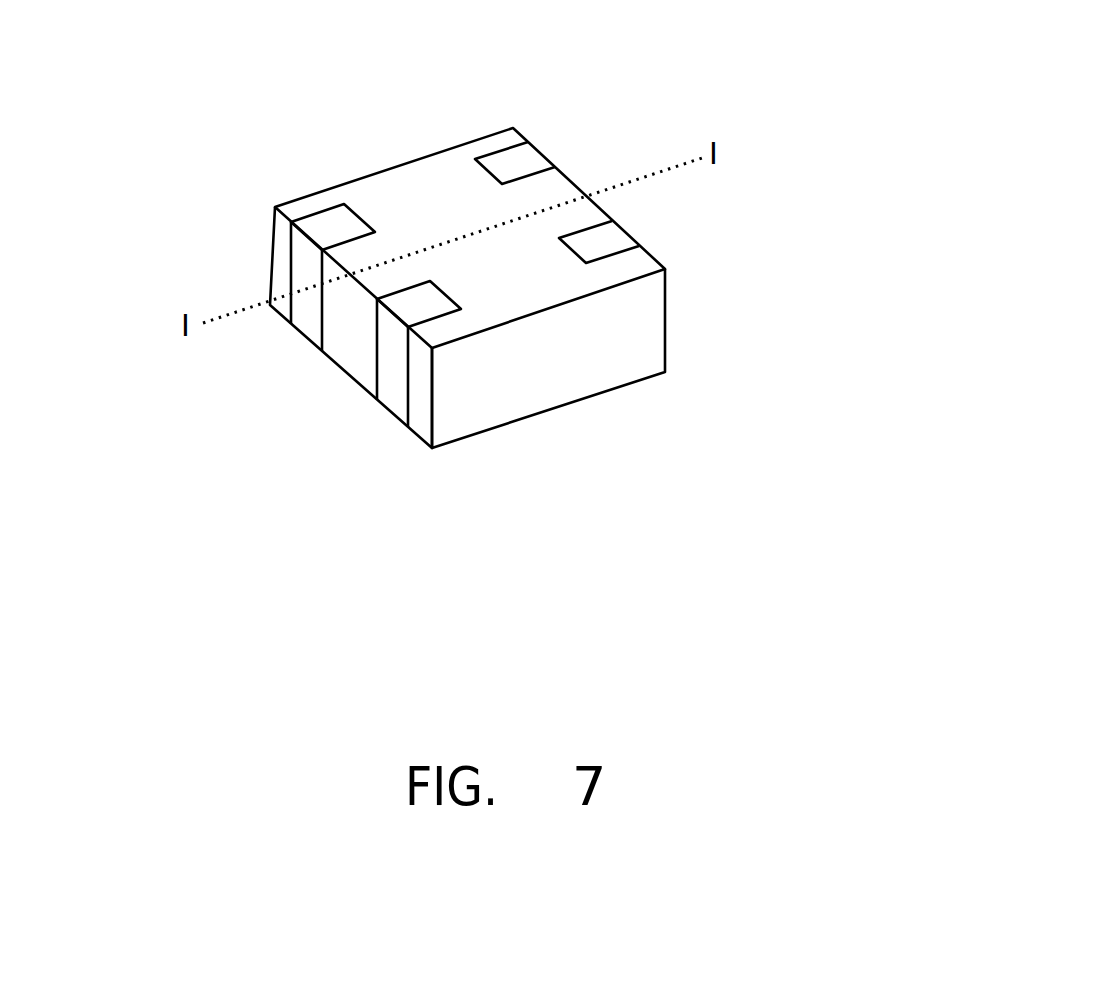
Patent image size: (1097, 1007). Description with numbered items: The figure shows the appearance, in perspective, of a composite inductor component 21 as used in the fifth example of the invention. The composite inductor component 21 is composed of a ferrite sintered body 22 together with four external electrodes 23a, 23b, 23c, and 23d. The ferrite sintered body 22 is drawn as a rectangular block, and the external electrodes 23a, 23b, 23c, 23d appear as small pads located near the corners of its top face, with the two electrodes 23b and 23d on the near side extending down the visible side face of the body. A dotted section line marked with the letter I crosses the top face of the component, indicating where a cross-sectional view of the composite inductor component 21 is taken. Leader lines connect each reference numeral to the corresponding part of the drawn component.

The composite inductor component 21 is at (557, 402).
The ferrite sintered body 22 is at (655, 330).
The external electrode 23a is at (531, 158).
The external electrode 23b is at (300, 329).
The external electrode 23c is at (630, 245).
The external electrode 23d is at (392, 403).